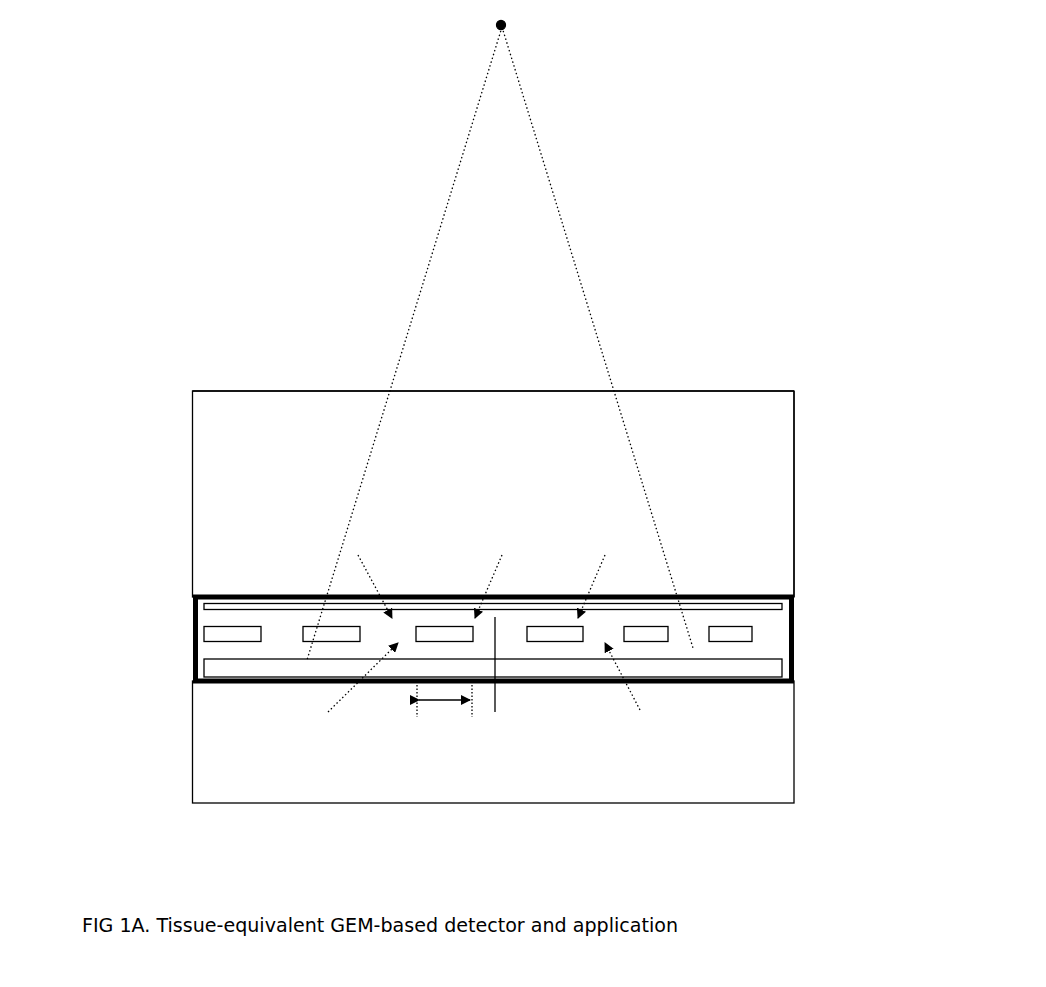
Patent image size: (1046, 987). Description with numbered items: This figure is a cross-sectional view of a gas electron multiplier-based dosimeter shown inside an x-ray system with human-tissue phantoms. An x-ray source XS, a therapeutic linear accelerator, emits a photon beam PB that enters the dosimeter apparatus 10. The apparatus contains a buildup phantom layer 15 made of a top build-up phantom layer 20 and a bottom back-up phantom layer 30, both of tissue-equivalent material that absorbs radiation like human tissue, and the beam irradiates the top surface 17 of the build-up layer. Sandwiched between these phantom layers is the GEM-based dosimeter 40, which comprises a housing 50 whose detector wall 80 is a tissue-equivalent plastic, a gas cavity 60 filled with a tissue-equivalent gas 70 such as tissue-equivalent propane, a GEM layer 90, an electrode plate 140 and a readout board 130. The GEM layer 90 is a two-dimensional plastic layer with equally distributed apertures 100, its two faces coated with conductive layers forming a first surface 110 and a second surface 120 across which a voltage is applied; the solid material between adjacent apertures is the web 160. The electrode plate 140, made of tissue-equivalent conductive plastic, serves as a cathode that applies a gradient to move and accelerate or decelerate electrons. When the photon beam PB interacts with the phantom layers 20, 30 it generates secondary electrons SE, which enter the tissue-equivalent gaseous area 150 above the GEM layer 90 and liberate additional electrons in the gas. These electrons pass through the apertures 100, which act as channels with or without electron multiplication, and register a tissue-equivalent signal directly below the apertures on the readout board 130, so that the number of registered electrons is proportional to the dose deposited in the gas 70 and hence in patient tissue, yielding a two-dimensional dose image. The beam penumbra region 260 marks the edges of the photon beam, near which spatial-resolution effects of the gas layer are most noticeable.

The x-ray source XS is at (521, 16).
The photon beam PB is at (500, 343).
The dosimeter apparatus 10 is at (820, 347).
The buildup phantom layer 15 is at (762, 420).
The top surface 17 is at (288, 391).
The top build-up phantom layer 20 is at (494, 494).
The bottom back-up phantom layer 30 is at (494, 742).
The GEM-based dosimeter 40 is at (506, 631).
The housing 50 is at (432, 630).
The detector wall 80 is at (193, 618).
The gas cavity 60 is at (507, 635).
The tissue-equivalent gas 70 is at (495, 676).
The GEM layer 90 is at (728, 631).
The apertures 100 is at (284, 636).
The first surface 110 is at (237, 626).
The second surface 120 is at (242, 642).
The readout board 130 is at (763, 664).
The electrode plate 140 is at (753, 604).
The gaseous area 150 is at (550, 618).
The web 160 is at (444, 710).
The beam penumbra region 260 is at (311, 618).
The secondary electrons SE is at (488, 583).